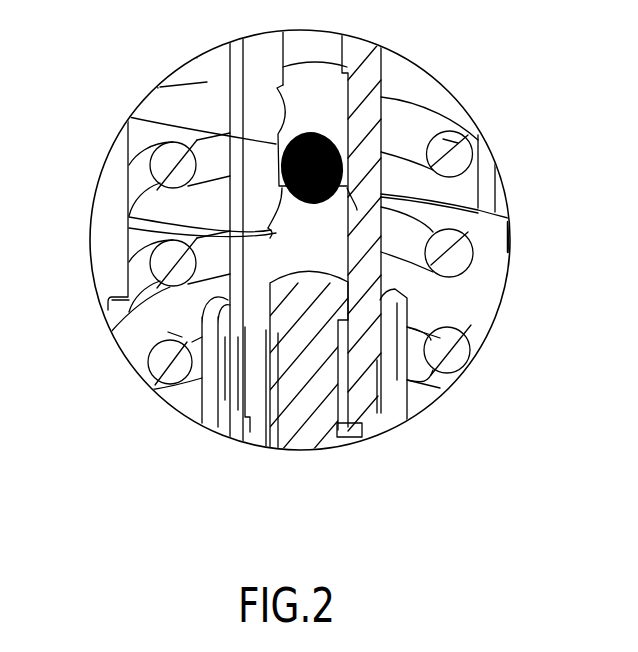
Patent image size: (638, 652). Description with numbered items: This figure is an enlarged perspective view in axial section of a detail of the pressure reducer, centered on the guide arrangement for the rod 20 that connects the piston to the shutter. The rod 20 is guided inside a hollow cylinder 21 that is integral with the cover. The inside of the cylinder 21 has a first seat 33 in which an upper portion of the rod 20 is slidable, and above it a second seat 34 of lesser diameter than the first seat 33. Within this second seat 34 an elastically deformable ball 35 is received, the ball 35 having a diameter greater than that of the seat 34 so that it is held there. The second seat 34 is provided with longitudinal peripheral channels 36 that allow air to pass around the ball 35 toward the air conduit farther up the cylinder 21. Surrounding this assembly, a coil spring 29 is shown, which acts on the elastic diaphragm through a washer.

The rod 20 is at (323, 338).
The hollow cylinder 21 is at (372, 76).
The coil spring 29 is at (443, 140).
The first seat 33 is at (232, 307).
The second seat 34 is at (300, 82).
The elastically deformable ball 35 is at (129, 217).
The longitudinal peripheral channels 36 is at (128, 117).